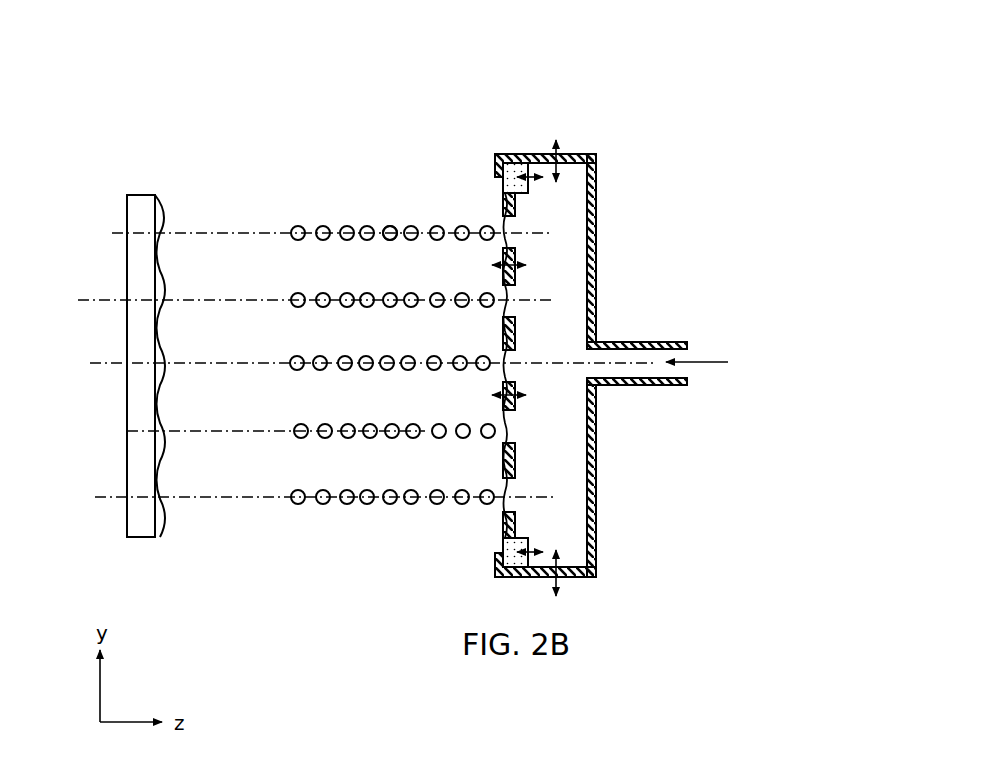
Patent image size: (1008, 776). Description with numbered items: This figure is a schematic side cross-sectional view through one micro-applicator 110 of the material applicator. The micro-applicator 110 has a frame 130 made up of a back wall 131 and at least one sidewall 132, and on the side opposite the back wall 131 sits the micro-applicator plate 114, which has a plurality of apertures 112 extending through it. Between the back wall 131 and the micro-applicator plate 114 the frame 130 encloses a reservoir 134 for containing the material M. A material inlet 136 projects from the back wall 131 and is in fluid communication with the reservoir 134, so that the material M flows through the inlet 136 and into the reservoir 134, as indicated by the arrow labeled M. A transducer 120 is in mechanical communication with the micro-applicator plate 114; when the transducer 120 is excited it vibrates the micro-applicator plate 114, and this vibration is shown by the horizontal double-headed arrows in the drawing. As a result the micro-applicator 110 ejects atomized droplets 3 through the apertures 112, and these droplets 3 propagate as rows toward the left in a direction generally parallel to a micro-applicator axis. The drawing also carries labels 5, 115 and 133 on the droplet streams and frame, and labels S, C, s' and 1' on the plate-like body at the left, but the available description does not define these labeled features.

The micro-applicator 110 is at (632, 324).
The apertures 112 is at (510, 236).
The micro-applicator plate 114 is at (500, 196).
The lower wall segment 115 is at (512, 530).
The transducer 120 is at (503, 543).
The frame 130 is at (593, 352).
The back wall 131 is at (597, 515).
The sidewall 132 is at (596, 154).
The bottom wall 133 is at (575, 567).
The reservoir 134 is at (565, 248).
The material inlet 136 is at (687, 392).
The particle streams 5 is at (328, 210).
The atomized droplets 3 is at (390, 226).
The substrate S is at (108, 186).
The coating C is at (163, 216).
The substrate surface s' is at (116, 319).
The beam axis 1' is at (230, 340).
The material M is at (710, 363).